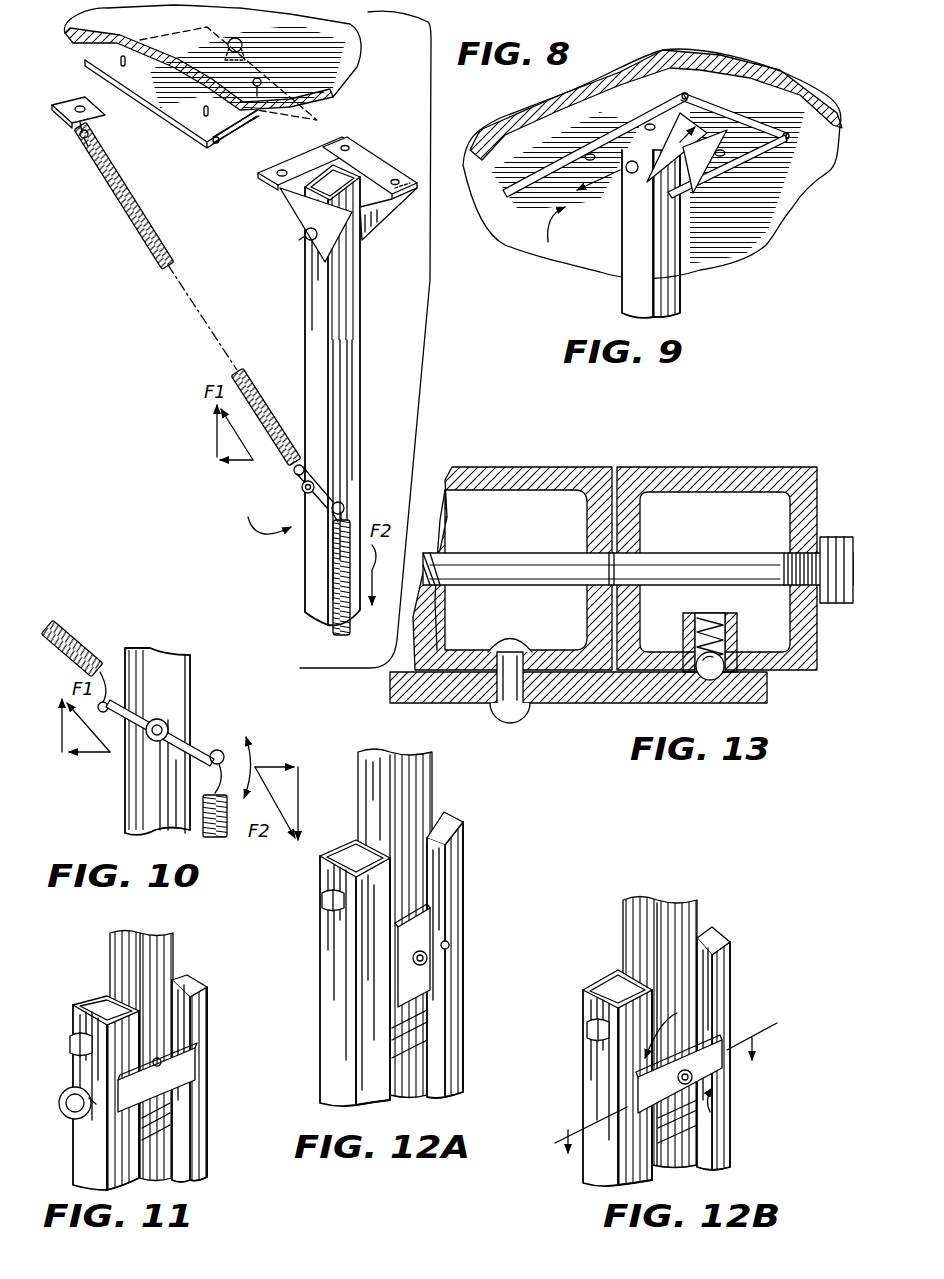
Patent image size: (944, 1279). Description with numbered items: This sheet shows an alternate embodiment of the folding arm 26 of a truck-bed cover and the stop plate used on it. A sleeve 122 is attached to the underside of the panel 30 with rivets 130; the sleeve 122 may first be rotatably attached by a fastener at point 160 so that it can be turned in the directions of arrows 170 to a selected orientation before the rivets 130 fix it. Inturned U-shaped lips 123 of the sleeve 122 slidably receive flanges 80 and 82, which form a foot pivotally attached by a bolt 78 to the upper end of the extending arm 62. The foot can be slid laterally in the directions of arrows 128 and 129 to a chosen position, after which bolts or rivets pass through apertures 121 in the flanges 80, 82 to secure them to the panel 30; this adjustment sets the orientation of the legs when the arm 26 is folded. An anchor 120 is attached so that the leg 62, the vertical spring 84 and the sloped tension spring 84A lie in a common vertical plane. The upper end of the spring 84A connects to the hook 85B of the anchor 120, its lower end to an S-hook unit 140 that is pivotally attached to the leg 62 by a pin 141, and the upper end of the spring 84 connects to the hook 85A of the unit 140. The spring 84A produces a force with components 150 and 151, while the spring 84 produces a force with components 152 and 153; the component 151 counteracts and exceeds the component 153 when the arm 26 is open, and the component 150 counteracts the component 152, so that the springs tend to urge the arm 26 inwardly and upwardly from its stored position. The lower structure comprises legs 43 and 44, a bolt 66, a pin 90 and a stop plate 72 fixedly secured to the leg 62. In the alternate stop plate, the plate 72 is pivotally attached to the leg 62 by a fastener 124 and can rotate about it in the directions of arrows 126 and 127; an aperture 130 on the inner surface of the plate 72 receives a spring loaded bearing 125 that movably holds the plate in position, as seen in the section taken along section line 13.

In FIG. 12B, the section line 13 is at (662, 1078).
In FIG. 8, the arm 26 is at (260, 518).
In FIG. 8, the panel 30 is at (338, 58).
In FIG. 9, the panel 30 is at (784, 68).
In FIG. 13, the leg 43 is at (545, 467).
In FIG. 11, the leg 43 is at (77, 1150).
In FIG. 12A, the leg 43 is at (323, 1013).
In FIG. 12B, the leg 43 is at (583, 1160).
In FIG. 13, the leg 44 is at (748, 467).
In FIG. 11, the leg 44 is at (196, 1140).
In FIG. 12A, the leg 44 is at (450, 1003).
In FIG. 12B, the leg 44 is at (720, 1137).
In FIG. 8, the extending arm 62 is at (352, 327).
In FIG. 9, the extending arm 62 is at (675, 302).
In FIG. 10, the extending arm 62 is at (168, 655).
In FIG. 11, the extending arm 62 is at (168, 948).
In FIG. 12A, the extending arm 62 is at (380, 783).
In FIG. 12B, the extending arm 62 is at (630, 918).
In FIG. 13, the bolt 66 is at (840, 520).
In FIG. 11, the bolt 66 is at (73, 1042).
In FIG. 12A, the bolt 66 is at (323, 903).
In FIG. 12B, the bolt 66 is at (586, 1033).
In FIG. 13, the stop plate 72 is at (770, 690).
In FIG. 11, the stop plate 72 is at (197, 1066).
In FIG. 12A, the stop plate 72 is at (428, 922).
In FIG. 12B, the stop plate 72 is at (723, 1035).
In FIG. 8, the bolt 78 is at (300, 236).
In FIG. 8, the flange 80 is at (303, 175).
In FIG. 8, the flange 82 is at (360, 146).
In FIG. 8, the spring 84 is at (330, 627).
In FIG. 10, the spring 84 is at (215, 816).
In FIG. 8, the tension spring 84A is at (144, 240).
In FIG. 10, the tension spring 84A is at (84, 636).
In FIG. 8, the hook 85A is at (343, 502).
In FIG. 10, the hook 85A is at (240, 739).
In FIG. 8, the hook 85B is at (80, 138).
In FIG. 11, the pin 90 is at (68, 1090).
In FIG. 8, the anchor 120 is at (105, 118).
In FIG. 8, the apertures 121 is at (388, 165).
In FIG. 9, the apertures 121 is at (603, 173).
In FIG. 8, the sleeve 122 is at (185, 135).
In FIG. 9, the sleeve 122 is at (545, 232).
In FIG. 8, the inturned U-shaped lips 123 is at (218, 145).
In FIG. 9, the inturned U-shaped lips 123 is at (690, 92).
In FIG. 13, the fastener 124 is at (532, 715).
In FIG. 12A, the fastener 124 is at (430, 959).
In FIG. 12B, the fastener 124 is at (692, 1079).
In FIG. 13, the spring loaded bearing 125 is at (720, 705).
In FIG. 12A, the spring loaded bearing 125 is at (452, 945).
In FIG. 12B, the arrow 126 is at (671, 1027).
In FIG. 12B, the arrow 127 is at (715, 1111).
In FIG. 9, the arrow 128 is at (600, 197).
In FIG. 9, the arrow 129 is at (582, 182).
In FIG. 8, the rivets 130 is at (263, 80).
In FIG. 13, the rivets 130 is at (690, 705).
In FIG. 8, the S-hook unit 140 is at (300, 440).
In FIG. 10, the S-hook unit 140 is at (183, 730).
In FIG. 10, the pin 141 is at (170, 718).
In FIG. 8, the force component 150 is at (214, 431).
In FIG. 10, the force component 150 is at (62, 748).
In FIG. 8, the force component 151 is at (245, 463).
In FIG. 10, the force component 151 is at (80, 757).
In FIG. 10, the force component 152 is at (310, 778).
In FIG. 10, the force component 153 is at (266, 766).
In FIG. 8, the point 160 is at (184, 90).
In FIG. 8, the arrows 170 is at (202, 54).